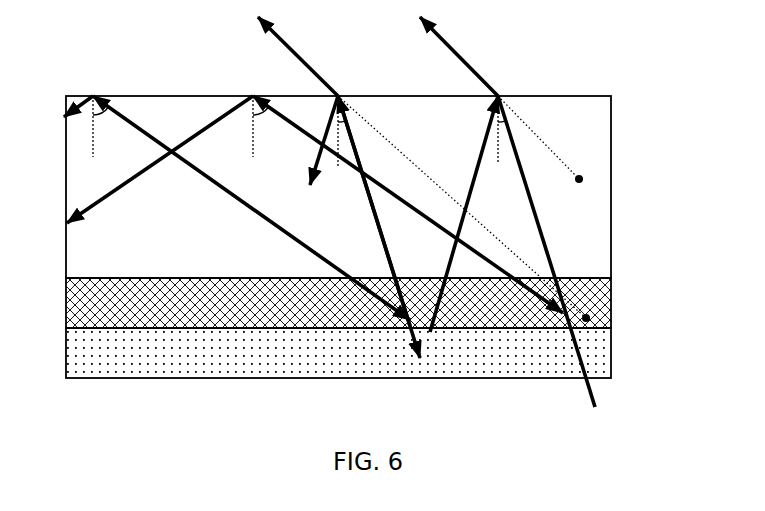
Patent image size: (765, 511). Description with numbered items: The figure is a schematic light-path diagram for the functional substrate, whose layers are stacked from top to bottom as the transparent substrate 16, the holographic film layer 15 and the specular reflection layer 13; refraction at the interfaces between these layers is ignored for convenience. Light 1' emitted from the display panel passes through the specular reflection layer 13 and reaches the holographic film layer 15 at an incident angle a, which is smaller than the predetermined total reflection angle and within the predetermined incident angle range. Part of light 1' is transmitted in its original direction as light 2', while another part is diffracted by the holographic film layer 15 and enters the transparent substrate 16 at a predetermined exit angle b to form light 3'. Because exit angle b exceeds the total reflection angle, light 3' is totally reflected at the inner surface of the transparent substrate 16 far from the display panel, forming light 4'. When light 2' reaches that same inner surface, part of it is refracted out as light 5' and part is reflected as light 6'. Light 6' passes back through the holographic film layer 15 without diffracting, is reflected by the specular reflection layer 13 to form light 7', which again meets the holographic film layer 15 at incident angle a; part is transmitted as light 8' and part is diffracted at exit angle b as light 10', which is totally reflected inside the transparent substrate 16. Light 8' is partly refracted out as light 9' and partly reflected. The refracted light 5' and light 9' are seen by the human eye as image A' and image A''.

The light 1' is at (568, 342).
The light 2' is at (527, 187).
The light 3' is at (408, 204).
The light 4' is at (160, 159).
The light 5' is at (459, 54).
The light 6' is at (464, 214).
The light 7' is at (379, 227).
The light 8' is at (373, 211).
The light 9' is at (298, 56).
The light 10' is at (251, 208).
The specular reflection layer 13 is at (609, 355).
The holographic film layer 15 is at (609, 308).
The transparent substrate 16 is at (609, 217).
The image A' is at (545, 154).
The image A'' is at (471, 209).
The incident angle a is at (424, 131).
The predetermined exit angle b is at (185, 126).